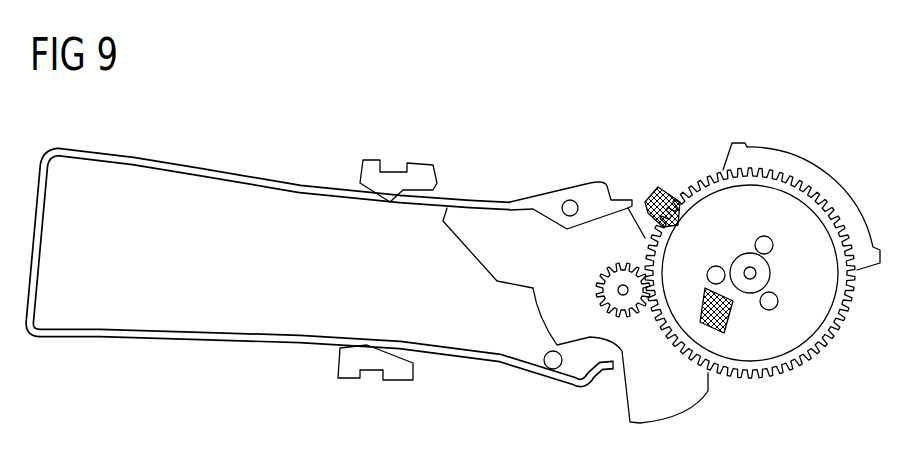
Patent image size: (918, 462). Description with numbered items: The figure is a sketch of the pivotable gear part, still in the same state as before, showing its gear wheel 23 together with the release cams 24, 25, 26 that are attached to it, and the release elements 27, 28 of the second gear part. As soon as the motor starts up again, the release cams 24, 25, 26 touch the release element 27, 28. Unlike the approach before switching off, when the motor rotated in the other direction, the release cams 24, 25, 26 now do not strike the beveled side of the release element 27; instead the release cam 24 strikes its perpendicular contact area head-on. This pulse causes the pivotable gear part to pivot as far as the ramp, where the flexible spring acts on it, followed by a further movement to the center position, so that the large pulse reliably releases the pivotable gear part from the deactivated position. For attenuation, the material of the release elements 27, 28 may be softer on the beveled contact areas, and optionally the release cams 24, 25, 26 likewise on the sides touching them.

The gear wheel 23 is at (810, 325).
The release cam 24 is at (716, 270).
The release cam 25 is at (768, 242).
The release cam 26 is at (775, 302).
The release element 27 is at (727, 320).
The release element 28 is at (663, 190).